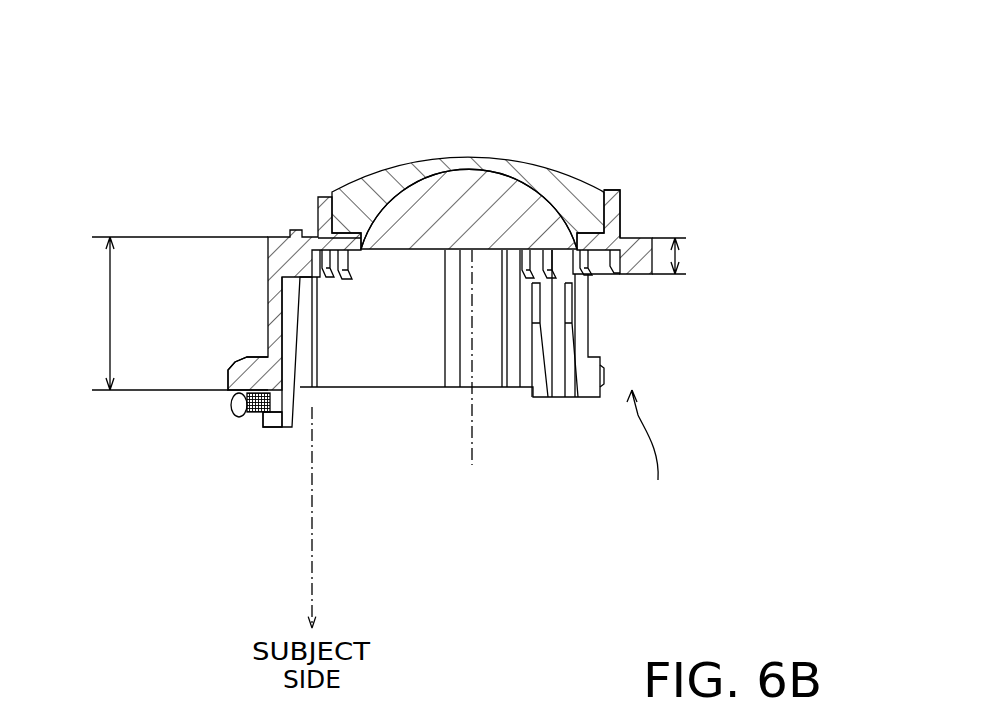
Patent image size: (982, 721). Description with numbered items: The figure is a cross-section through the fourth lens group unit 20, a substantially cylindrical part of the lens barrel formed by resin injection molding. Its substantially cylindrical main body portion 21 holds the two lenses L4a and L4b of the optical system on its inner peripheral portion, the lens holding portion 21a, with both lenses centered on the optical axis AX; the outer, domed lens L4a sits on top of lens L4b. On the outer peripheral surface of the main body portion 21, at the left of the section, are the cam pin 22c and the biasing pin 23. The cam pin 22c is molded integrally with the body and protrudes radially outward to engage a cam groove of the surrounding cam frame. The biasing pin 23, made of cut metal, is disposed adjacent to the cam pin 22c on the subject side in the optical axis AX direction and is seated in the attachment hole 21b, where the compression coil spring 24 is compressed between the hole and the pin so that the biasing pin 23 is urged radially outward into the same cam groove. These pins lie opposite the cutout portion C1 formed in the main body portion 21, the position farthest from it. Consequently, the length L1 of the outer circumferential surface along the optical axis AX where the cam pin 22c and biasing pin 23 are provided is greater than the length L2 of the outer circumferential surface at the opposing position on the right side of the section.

The fourth lens group unit 20 is at (412, 263).
The main body portion 21 is at (633, 242).
The lens holding portion 21a is at (605, 190).
The attachment hole 21b is at (245, 419).
The cam pin 22c is at (242, 363).
The biasing pin 23 is at (234, 405).
The compression coil spring 24 is at (262, 416).
The lens L4a is at (467, 156).
The lens L4b is at (513, 182).
The length L1 is at (171, 313).
The length L2 is at (687, 256).
The optical axis AX is at (473, 375).
The cutout portion C1 is at (649, 454).